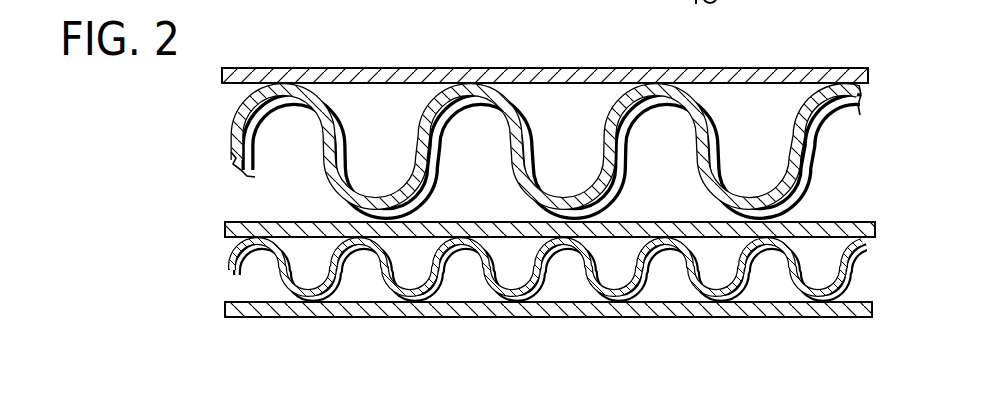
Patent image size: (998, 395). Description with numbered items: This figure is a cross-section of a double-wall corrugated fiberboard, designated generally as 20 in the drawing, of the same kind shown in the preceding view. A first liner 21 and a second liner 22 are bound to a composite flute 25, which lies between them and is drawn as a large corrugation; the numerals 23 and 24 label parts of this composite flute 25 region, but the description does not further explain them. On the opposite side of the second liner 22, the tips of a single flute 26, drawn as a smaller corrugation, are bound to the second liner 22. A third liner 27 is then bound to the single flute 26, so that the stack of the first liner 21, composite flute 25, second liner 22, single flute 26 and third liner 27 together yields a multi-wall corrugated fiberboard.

The composite structural panel 20 is at (576, 202).
The first liner 21 is at (568, 73).
The second liner 22 is at (840, 222).
The corrugated core sheet 23 is at (432, 105).
The corrugation wall 24 is at (337, 177).
The composite flute 25 is at (862, 100).
The single flute 26 is at (852, 268).
The third liner 27 is at (450, 310).